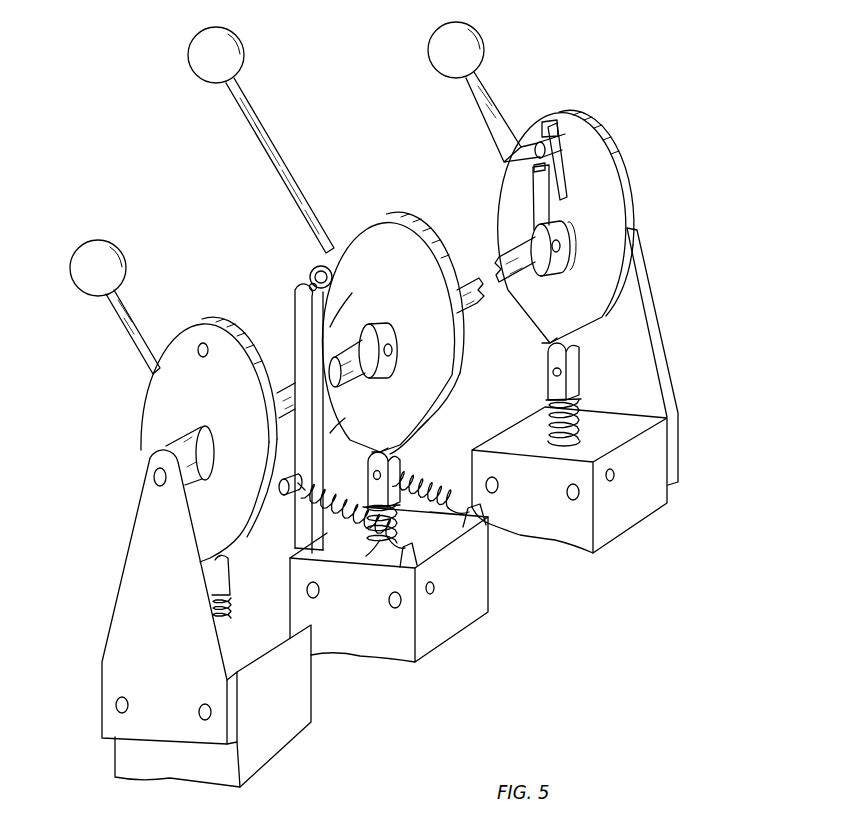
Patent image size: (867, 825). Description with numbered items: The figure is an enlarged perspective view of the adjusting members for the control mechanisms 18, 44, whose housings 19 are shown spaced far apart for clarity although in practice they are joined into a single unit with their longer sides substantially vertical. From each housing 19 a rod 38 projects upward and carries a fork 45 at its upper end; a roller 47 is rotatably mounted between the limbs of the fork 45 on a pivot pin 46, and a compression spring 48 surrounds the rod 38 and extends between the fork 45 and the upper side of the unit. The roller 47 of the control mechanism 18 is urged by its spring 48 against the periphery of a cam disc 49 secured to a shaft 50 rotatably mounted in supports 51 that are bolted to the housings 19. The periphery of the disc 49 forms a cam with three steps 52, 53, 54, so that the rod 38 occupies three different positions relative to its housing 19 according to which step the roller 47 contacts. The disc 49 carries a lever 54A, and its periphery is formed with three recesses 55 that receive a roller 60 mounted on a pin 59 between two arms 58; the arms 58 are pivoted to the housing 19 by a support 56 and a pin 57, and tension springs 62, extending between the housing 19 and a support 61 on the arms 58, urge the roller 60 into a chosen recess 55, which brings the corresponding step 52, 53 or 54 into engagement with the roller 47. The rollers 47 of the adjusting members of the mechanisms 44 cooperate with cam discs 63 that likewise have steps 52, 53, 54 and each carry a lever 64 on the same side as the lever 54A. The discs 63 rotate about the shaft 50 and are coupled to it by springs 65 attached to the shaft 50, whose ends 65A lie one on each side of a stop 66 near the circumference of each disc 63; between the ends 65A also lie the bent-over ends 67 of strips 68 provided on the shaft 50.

The control mechanism 18 is at (388, 660).
The housing 19 is at (290, 745).
The rod 38 is at (556, 443).
The control mechanism 44 is at (110, 772).
The fork 45 is at (230, 597).
The pivot pin 46 is at (552, 374).
The roller 47 is at (228, 570).
The compression spring 48 is at (230, 612).
The cam disc 49 is at (394, 212).
The shaft 50 is at (495, 266).
The support 51 is at (140, 500).
The step 52 is at (380, 447).
The step 53 is at (232, 542).
The step 54 is at (268, 441).
The lever 54A is at (266, 116).
The recess 55 is at (336, 300).
The support 56 is at (332, 540).
The pin 57 is at (296, 548).
The arm 58 is at (300, 452).
The pin 59 is at (294, 298).
The roller 60 is at (310, 270).
The support 61 is at (284, 496).
The tension spring 62 is at (308, 520).
The cam disc 63 is at (216, 318).
The lever 64 is at (112, 305).
The spring 65 is at (566, 190).
The spring end 65A is at (552, 120).
The stop 66 is at (537, 160).
The bent-over end 67 is at (537, 175).
The strip 68 is at (537, 197).